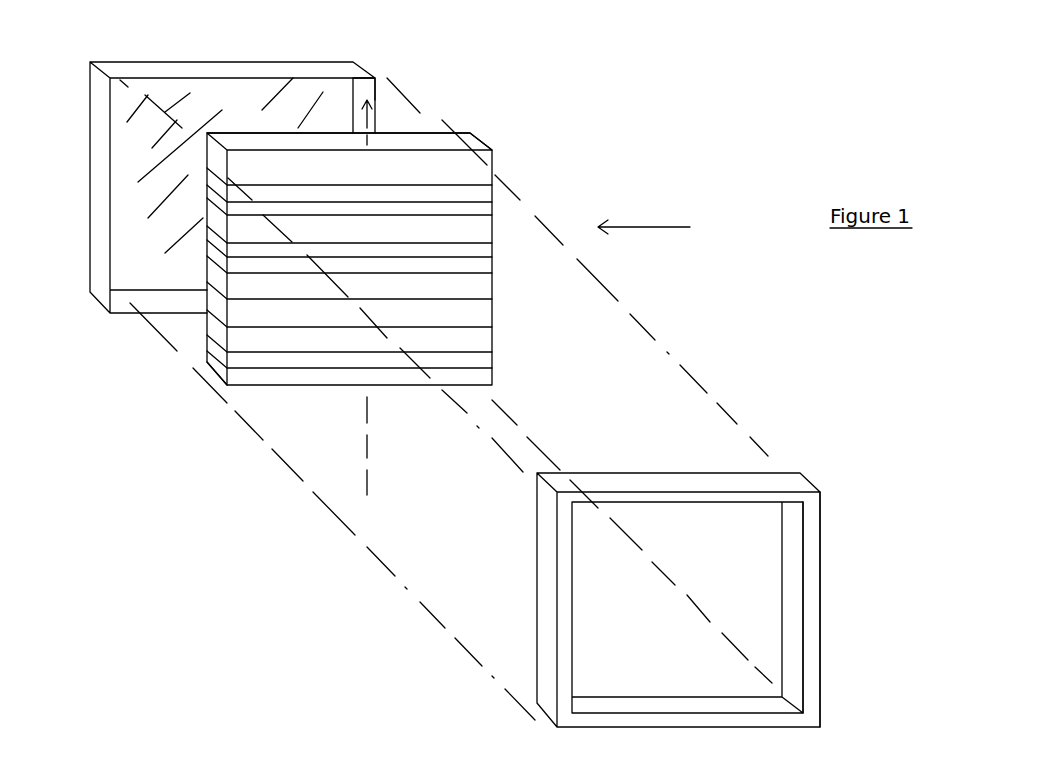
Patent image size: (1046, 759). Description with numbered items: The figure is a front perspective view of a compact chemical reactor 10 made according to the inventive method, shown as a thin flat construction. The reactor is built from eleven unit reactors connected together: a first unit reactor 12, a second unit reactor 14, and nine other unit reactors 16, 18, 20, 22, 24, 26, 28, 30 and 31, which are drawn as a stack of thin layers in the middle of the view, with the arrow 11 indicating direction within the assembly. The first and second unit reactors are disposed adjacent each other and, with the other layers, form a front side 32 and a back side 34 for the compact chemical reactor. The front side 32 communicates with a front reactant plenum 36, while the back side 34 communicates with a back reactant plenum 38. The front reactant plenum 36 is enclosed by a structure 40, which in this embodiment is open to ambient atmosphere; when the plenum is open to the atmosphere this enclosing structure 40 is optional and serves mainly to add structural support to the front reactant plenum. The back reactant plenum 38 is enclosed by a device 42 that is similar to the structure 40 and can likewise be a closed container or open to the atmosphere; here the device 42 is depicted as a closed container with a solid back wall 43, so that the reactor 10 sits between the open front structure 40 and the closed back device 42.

The compact chemical reactor 10 is at (217, 370).
The light direction arrow 11 is at (391, 286).
The first unit reactor 12 is at (479, 273).
The second unit reactor 14 is at (482, 343).
The unit reactor 16 is at (483, 367).
The unit reactor 18 is at (483, 385).
The unit reactor 20 is at (473, 290).
The unit reactor 22 is at (480, 272).
The unit reactor 24 is at (480, 250).
The unit reactor 26 is at (483, 225).
The unit reactor 28 is at (487, 208).
The unit reactor 30 is at (478, 198).
The unit reactor 31 is at (478, 168).
The front side 32 is at (660, 222).
The back side 34 is at (405, 133).
The front reactant plenum 36 is at (765, 638).
The back reactant plenum 38 is at (327, 78).
The structure 40 is at (812, 558).
The device 42 is at (298, 55).
The solid back wall 43 is at (157, 104).